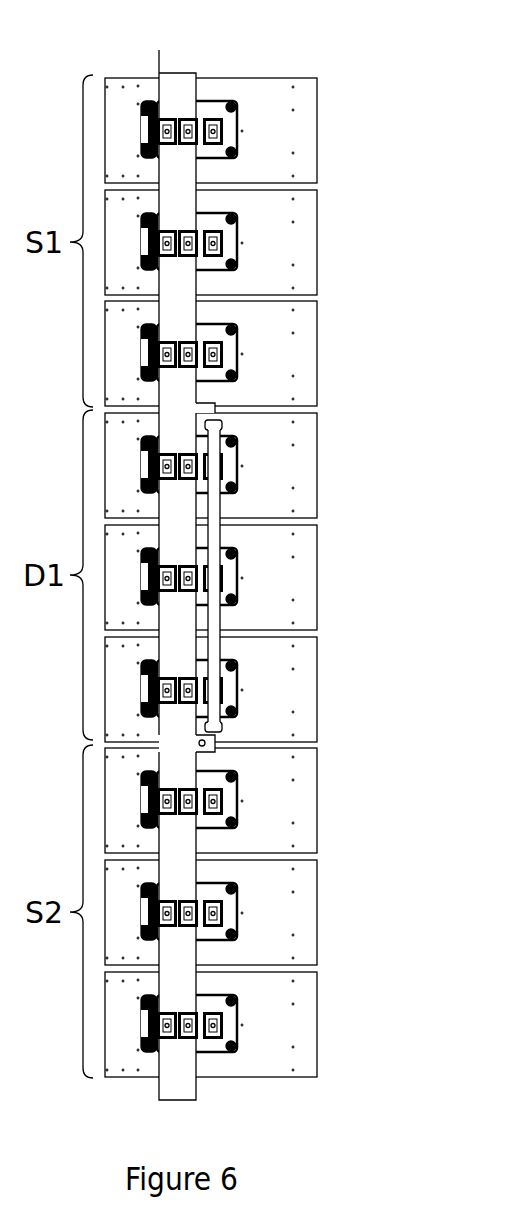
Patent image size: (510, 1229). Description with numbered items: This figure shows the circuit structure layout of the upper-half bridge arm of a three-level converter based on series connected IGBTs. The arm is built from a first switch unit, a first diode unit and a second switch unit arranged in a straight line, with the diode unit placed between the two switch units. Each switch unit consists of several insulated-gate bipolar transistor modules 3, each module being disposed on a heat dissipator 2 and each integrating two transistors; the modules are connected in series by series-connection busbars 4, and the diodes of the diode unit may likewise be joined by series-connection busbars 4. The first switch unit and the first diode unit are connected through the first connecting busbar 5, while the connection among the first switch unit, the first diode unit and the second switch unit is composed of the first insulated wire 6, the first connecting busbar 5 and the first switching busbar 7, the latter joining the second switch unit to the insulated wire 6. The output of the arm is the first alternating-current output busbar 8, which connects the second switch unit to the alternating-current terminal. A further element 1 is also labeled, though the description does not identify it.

The bus bar 1 is at (178, 95).
The heat dissipator 2 is at (270, 127).
The insulated-gate bipolar transistor module 3 is at (228, 212).
The series-connection busbar 4 is at (178, 312).
The first connecting busbar 5 is at (177, 403).
The first insulated wire 6 is at (215, 518).
The first switching busbar 7 is at (178, 777).
The first alternating-current output busbar 8 is at (178, 1075).